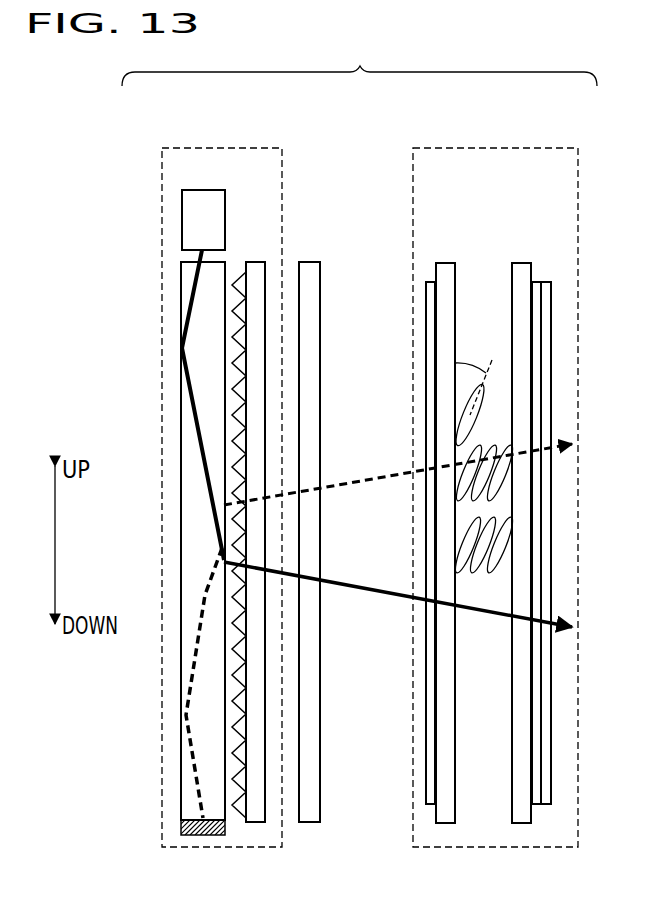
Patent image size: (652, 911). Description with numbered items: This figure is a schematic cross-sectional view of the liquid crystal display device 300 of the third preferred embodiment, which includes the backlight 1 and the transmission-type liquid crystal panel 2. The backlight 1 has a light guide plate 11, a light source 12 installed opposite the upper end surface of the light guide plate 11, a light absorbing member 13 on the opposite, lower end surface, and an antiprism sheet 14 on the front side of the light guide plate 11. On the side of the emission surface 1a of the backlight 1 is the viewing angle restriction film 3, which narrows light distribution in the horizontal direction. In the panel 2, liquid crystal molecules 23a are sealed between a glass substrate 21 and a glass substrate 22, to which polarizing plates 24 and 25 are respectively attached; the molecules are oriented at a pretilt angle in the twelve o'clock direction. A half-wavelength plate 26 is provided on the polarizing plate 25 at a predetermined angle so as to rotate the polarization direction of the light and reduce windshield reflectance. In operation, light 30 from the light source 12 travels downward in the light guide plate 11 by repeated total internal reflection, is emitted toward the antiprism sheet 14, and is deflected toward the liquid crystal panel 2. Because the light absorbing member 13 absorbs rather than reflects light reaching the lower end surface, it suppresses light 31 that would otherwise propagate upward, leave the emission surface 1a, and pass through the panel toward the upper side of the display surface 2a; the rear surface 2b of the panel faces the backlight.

The liquid crystal display device 300 is at (359, 61).
The backlight 1 is at (221, 147).
The transmission-type liquid crystal panel 2 is at (484, 147).
The emission surface 1a is at (322, 270).
The display surface 2a is at (552, 308).
The rear surface of liquid crystal panel 2b is at (426, 312).
The viewing angle restriction film 3 is at (306, 823).
The light guide plate 11 is at (180, 772).
The light source 12 is at (182, 218).
The light absorbing member 13 is at (203, 836).
The antiprism sheet 14 is at (255, 823).
The glass substrate 21 is at (446, 824).
The glass substrate 22 is at (520, 824).
The liquid crystal molecules 23a is at (480, 400).
The polarizing plate 24 is at (430, 805).
The polarizing plate 25 is at (536, 805).
The half-wavelength plate 26 is at (545, 805).
The light 30 is at (195, 438).
The light 31 is at (196, 662).